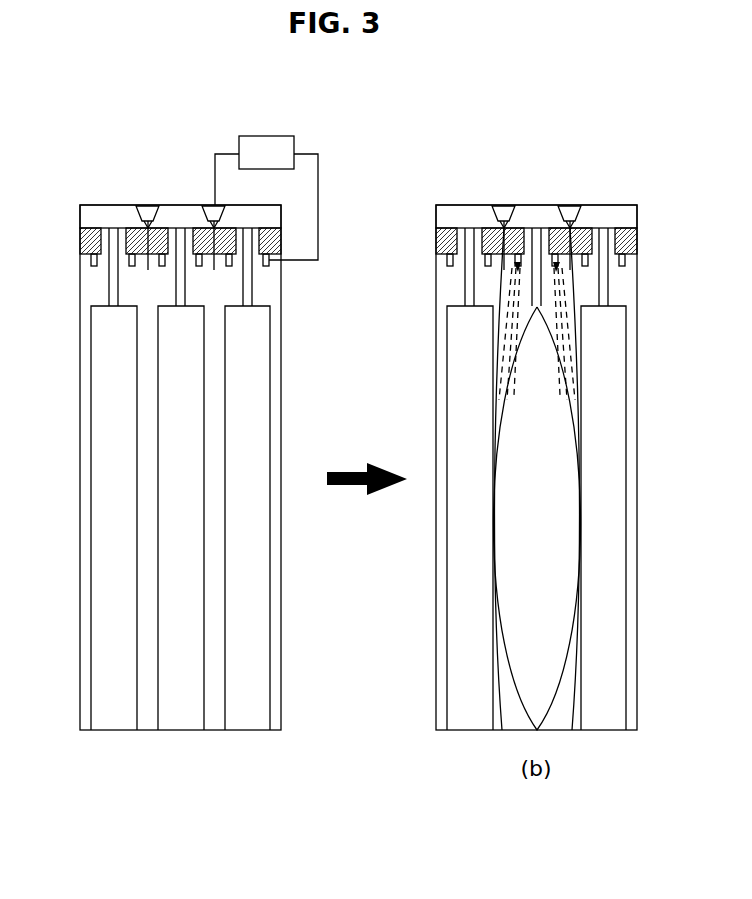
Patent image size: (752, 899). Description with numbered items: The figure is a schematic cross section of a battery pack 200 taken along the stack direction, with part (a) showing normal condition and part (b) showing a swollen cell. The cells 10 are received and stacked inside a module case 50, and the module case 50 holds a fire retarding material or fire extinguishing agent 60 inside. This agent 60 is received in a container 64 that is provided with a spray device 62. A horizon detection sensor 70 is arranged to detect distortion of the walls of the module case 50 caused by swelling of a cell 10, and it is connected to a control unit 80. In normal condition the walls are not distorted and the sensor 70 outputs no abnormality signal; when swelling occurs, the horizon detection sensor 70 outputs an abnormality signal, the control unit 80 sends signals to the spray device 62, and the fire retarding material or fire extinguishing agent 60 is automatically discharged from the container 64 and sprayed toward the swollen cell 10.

The battery pack 200 is at (108, 133).
The control unit 80 is at (266, 136).
The horizon detection sensor 70 is at (148, 207).
The container 64 is at (90, 226).
The fire retarding material or fire extinguishing agent 60 is at (89, 242).
The spray device 62 is at (90, 261).
The module case 50 is at (80, 311).
The cell 10 is at (101, 370).